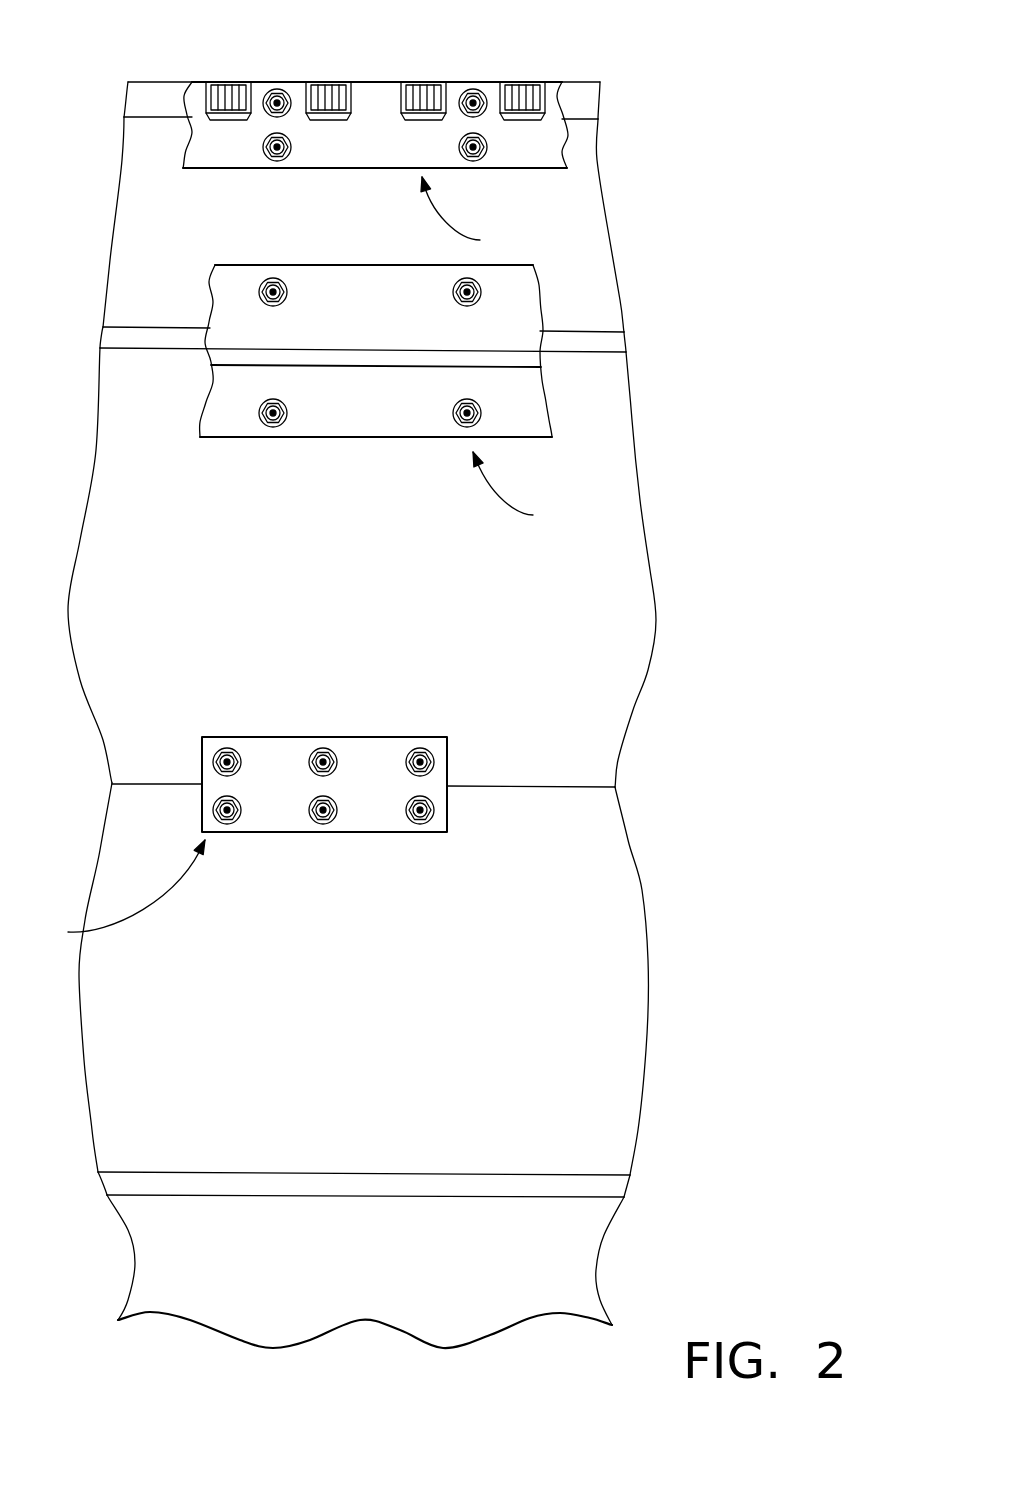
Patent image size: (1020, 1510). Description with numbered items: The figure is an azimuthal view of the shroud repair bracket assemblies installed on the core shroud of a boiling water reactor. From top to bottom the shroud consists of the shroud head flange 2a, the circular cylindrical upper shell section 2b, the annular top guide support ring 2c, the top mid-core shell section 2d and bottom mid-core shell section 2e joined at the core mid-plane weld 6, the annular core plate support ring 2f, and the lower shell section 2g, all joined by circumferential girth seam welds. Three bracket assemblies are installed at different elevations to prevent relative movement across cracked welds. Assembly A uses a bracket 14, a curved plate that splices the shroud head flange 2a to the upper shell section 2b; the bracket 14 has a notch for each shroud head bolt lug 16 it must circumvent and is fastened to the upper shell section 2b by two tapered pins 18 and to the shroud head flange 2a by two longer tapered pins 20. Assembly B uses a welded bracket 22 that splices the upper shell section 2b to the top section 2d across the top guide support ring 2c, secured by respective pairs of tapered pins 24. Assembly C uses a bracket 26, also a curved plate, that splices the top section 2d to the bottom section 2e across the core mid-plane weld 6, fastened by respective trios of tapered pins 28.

The core mid-plane weld 6 is at (498, 785).
The shroud head flange 2a is at (147, 87).
The upper shell section 2b is at (137, 187).
The top guide support ring 2c is at (605, 343).
The top mid-core shell section 2d is at (630, 507).
The bottom mid-core shell section 2e is at (587, 920).
The core plate support ring 2f is at (612, 1187).
The lower shell section 2g is at (587, 1253).
The bracket 14 is at (295, 170).
The shroud head bolt lug 16 is at (227, 82).
The tapered pins 18 is at (487, 153).
The tapered pins 20 is at (473, 93).
The bracket 22 is at (320, 438).
The tapered pins 24 is at (263, 427).
The bracket 26 is at (288, 832).
The tapered pins 28 is at (428, 823).
The bracket assembly A is at (460, 217).
The bracket assembly B is at (514, 492).
The bracket assembly C is at (124, 893).